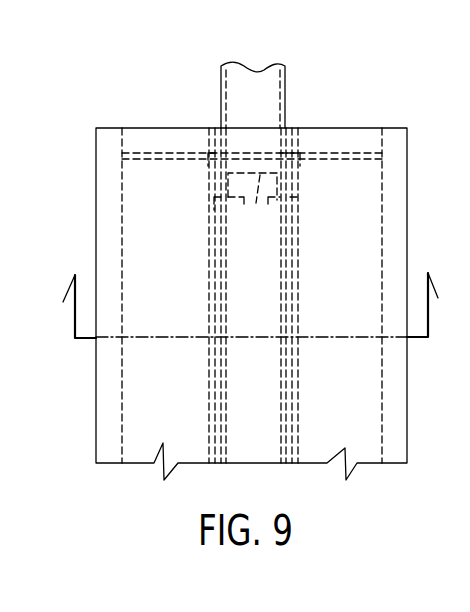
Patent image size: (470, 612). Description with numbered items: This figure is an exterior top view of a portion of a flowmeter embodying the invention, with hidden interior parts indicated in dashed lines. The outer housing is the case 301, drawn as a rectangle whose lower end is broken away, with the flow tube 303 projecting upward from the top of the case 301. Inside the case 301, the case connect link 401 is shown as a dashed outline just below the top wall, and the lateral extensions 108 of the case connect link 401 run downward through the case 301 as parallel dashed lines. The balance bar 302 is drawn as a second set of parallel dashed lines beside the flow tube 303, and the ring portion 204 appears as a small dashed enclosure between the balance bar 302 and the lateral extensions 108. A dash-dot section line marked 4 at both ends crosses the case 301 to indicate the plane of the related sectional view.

The case 301 is at (95, 148).
The flow tube 303 is at (285, 98).
The case connect link 401 is at (181, 159).
The balance bar 302 is at (207, 262).
The lateral extensions 108 is at (247, 205).
The ring portion 204 is at (256, 177).
The section line 4- 4 is at (248, 292).